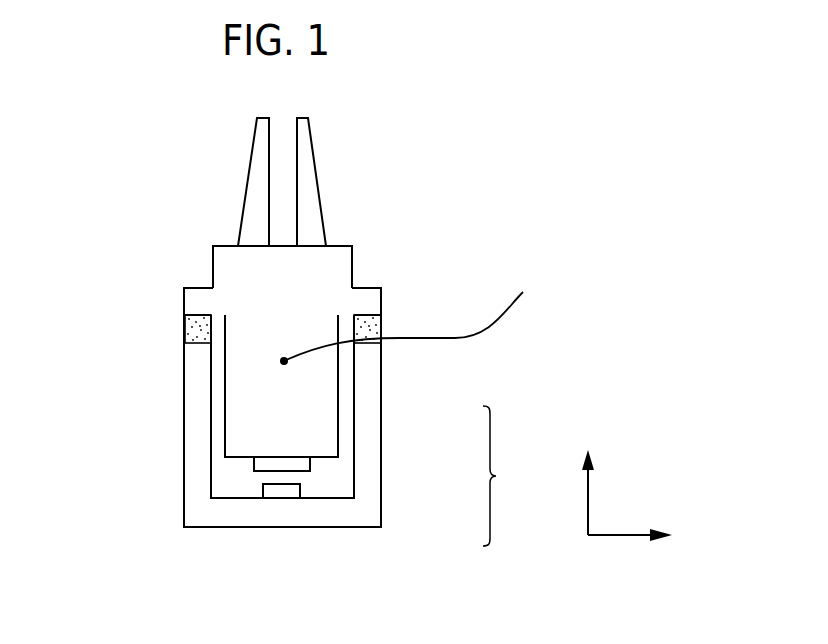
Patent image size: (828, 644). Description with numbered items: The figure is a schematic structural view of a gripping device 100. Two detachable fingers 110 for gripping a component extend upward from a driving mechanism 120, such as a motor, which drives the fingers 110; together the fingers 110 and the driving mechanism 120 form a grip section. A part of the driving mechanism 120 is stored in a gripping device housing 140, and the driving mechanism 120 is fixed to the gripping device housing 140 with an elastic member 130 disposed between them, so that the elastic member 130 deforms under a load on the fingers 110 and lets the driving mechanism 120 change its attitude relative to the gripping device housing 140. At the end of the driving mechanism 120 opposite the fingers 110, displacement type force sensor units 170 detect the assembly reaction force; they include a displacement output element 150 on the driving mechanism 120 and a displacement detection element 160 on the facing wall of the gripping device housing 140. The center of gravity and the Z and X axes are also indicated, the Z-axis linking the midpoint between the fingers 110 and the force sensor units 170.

The gripping device 100 is at (193, 154).
The detachable fingers 110 is at (312, 205).
The driving mechanism 120 is at (232, 259).
The elastic member 130 is at (185, 327).
The gripping device housing 140 is at (195, 452).
The displacement output element 150 is at (310, 466).
The displacement detection element 160 is at (301, 493).
The force sensor units 170 is at (508, 476).